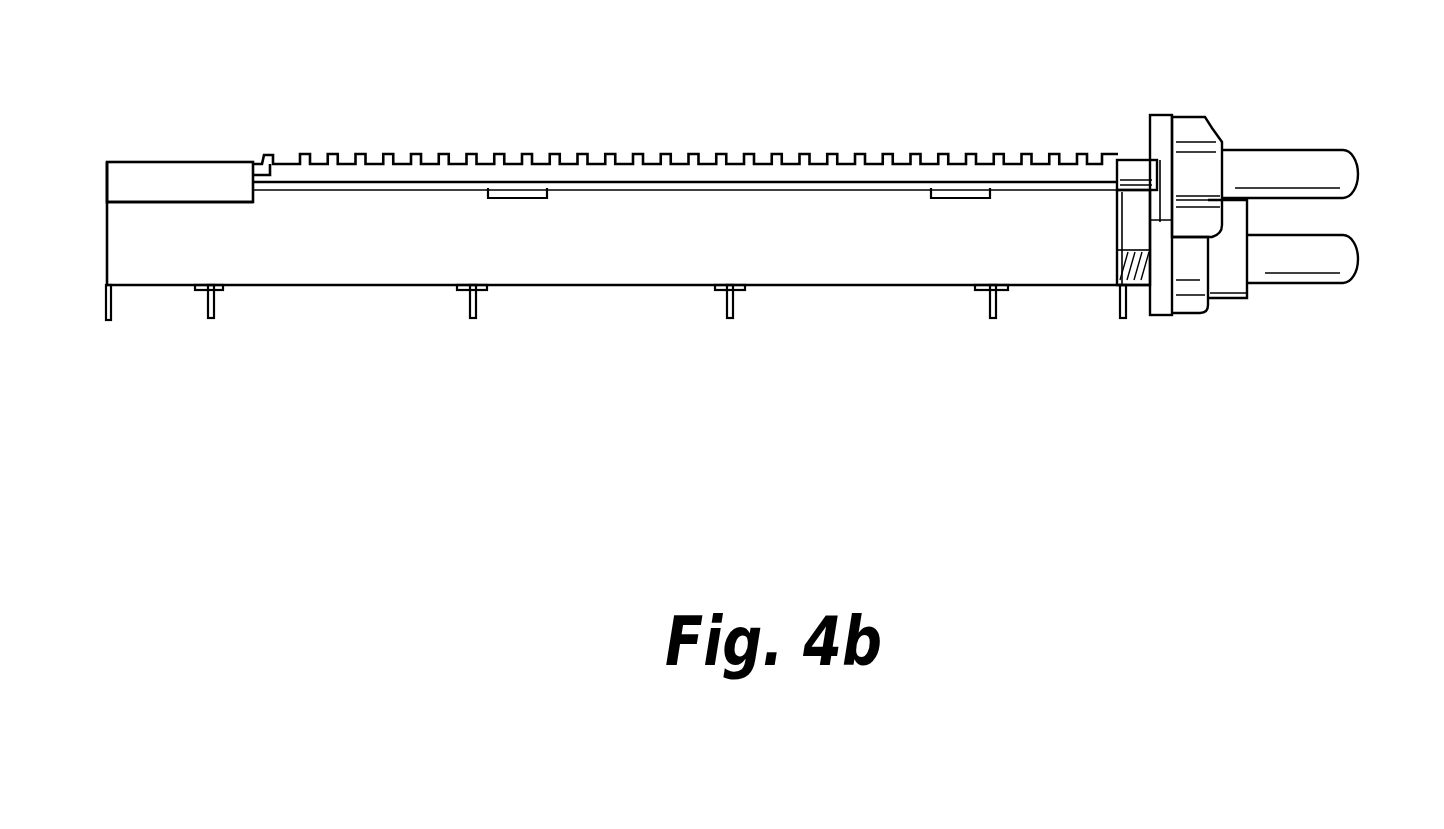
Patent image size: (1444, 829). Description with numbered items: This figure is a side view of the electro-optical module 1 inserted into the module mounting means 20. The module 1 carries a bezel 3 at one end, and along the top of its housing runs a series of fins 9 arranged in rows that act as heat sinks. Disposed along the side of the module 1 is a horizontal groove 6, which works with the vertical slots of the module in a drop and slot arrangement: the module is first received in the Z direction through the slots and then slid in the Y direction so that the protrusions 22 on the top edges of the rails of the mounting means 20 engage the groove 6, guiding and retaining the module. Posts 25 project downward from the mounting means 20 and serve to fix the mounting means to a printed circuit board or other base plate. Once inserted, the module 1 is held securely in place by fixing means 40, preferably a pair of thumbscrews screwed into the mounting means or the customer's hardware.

The electro-optical module 1 is at (722, 147).
The bezel 3 is at (1192, 300).
The horizontal groove 6 is at (465, 187).
The fins 9 is at (885, 153).
The module mounting means 20 is at (187, 170).
The protrusions 22 is at (528, 197).
The posts 25 is at (110, 310).
The fixing means 40 is at (1335, 258).